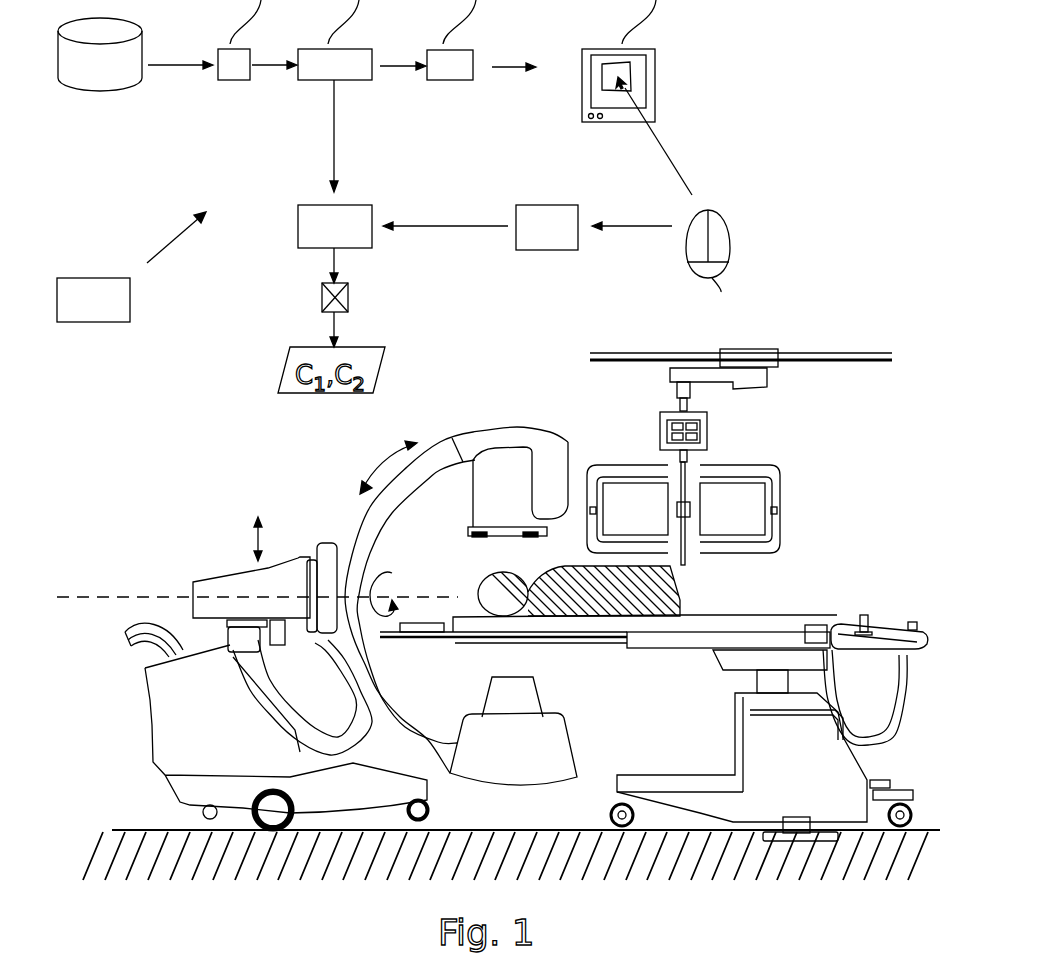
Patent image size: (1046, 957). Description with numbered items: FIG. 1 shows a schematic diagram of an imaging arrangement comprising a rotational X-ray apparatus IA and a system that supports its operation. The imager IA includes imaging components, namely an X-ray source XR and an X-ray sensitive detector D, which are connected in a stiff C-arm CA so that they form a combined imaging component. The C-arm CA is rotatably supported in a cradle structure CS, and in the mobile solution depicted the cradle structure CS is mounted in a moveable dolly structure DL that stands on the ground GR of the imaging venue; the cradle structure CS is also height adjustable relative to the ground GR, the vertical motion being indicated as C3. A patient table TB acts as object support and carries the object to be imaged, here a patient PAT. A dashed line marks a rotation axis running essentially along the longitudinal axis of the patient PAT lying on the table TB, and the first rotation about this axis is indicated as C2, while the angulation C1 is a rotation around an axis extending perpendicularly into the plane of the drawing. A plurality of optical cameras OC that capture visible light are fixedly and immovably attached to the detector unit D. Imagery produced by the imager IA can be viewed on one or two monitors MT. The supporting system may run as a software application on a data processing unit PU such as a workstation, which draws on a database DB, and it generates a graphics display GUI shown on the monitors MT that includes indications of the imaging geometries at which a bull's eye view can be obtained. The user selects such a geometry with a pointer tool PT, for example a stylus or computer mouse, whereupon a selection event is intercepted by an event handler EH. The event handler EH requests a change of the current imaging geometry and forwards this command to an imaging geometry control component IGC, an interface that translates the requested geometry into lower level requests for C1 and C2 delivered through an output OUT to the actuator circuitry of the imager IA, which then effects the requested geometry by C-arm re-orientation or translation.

The database DB is at (116, 80).
The graphics display GUI is at (627, 78).
The event handler EH is at (551, 203).
The pointer tool PT is at (721, 292).
The imaging geometry control component IGC is at (305, 252).
The output port OUT is at (348, 303).
The data processing unit PU is at (110, 311).
The monitor MT is at (769, 464).
The C-arm CA is at (392, 513).
The X-ray sensitive detector D is at (512, 432).
The optical camera OC is at (476, 538).
The angulation C1 is at (383, 461).
The first rotation C2 is at (395, 587).
The translation C3 is at (240, 539).
The rotational X-ray apparatus IA is at (196, 552).
The cradle structure CS is at (292, 576).
The dolly structure DL is at (153, 688).
The X-ray source XR is at (538, 681).
The patient PAT is at (687, 589).
The patient table TB is at (607, 645).
The ground GR is at (140, 830).